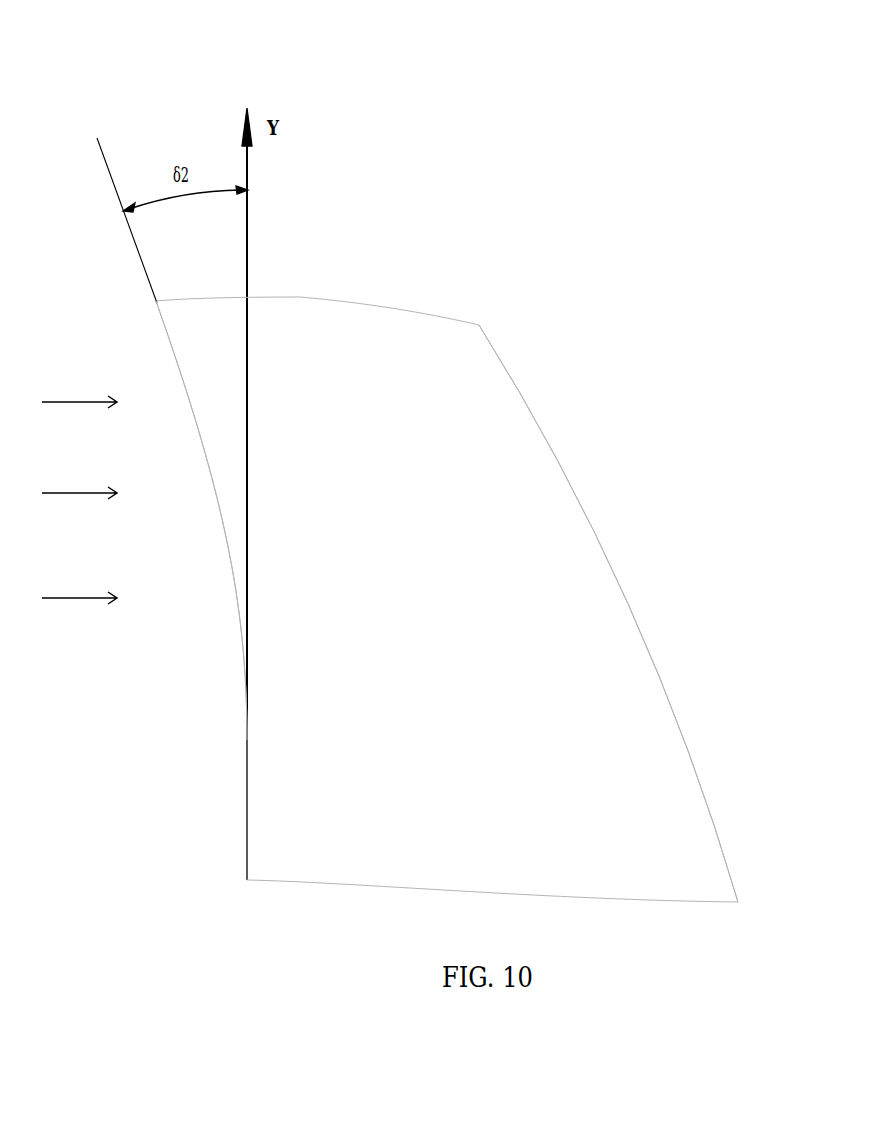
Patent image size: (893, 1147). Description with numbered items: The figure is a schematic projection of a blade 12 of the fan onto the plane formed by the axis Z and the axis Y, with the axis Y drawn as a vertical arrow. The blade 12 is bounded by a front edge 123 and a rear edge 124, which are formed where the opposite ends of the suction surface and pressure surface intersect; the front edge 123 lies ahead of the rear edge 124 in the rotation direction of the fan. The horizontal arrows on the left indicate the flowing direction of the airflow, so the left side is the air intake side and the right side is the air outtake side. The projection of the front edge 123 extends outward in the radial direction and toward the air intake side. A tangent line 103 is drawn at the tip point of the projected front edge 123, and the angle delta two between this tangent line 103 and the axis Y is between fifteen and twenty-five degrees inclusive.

The blade 12 is at (681, 119).
The tangent line 103 is at (120, 206).
The front edge 123 is at (236, 580).
The rear edge 124 is at (638, 639).